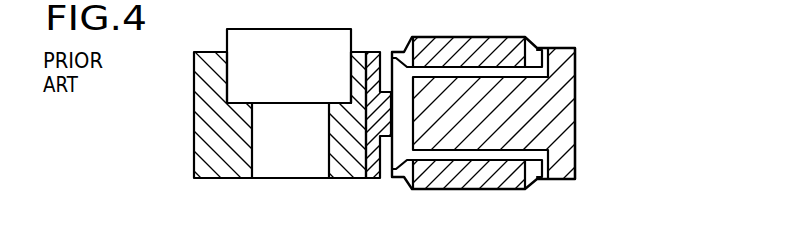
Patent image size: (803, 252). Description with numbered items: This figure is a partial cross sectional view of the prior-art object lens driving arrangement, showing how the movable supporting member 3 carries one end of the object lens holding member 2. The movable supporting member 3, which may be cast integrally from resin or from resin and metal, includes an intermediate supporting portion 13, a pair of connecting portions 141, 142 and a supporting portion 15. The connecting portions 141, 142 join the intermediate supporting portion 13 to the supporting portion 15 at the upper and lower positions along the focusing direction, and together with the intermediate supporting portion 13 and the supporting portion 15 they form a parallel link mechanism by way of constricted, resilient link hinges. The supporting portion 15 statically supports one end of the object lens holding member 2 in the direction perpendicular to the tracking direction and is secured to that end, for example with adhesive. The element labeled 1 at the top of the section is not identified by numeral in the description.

The element 1 is at (320, 53).
The object lens holding member 2 is at (200, 137).
The movable supporting member 3 is at (598, 64).
The intermediate supporting portion 13 is at (567, 123).
The supporting portion 15 is at (372, 55).
The connecting portion 141 is at (481, 43).
The connecting portion 142 is at (497, 173).